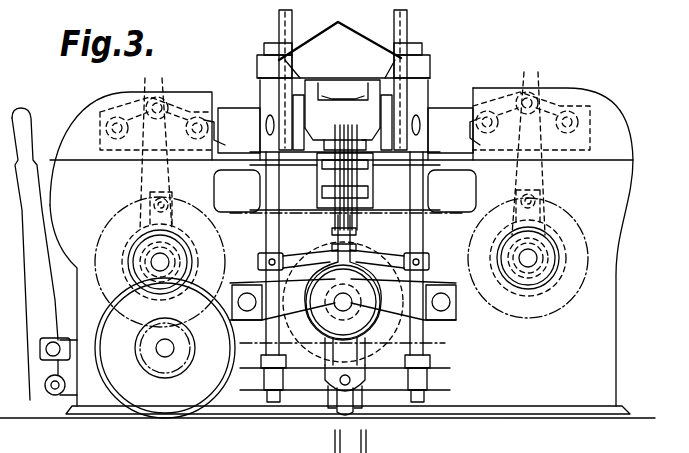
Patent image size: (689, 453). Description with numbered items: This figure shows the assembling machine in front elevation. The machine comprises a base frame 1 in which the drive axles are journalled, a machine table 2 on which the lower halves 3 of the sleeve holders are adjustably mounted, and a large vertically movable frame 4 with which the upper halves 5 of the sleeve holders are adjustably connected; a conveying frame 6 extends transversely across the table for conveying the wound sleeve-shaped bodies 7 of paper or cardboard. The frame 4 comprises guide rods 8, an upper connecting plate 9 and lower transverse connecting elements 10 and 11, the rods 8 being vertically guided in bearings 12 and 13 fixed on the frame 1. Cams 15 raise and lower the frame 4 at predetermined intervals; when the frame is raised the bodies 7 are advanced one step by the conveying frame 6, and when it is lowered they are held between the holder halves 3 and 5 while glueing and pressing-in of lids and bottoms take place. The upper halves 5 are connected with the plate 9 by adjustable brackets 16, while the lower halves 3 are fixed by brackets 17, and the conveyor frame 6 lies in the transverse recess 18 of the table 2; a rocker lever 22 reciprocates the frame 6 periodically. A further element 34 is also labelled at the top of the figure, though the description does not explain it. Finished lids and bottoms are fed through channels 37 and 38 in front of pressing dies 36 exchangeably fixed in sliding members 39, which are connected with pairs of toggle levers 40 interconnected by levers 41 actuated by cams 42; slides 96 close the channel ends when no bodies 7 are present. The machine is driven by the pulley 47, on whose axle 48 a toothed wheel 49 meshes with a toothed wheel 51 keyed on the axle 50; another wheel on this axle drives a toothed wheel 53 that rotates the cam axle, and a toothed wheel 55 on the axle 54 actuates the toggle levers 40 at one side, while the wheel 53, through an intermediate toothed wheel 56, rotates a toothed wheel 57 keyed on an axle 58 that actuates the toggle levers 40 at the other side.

The base frame 1 is at (616, 355).
The machine table 2 is at (508, 441).
The lower halves of the sleeve holders 3 is at (300, 166).
The vertically movable frame 4 is at (380, 52).
The upper halves of the sleeve holders 5 is at (343, 92).
The conveying frame 6 is at (333, 172).
The sleeve-shaped bodies 7 is at (346, 168).
The guide rods 8 is at (293, 102).
The upper connecting plate 9 is at (305, 60).
The lower transverse connecting element 10 is at (424, 256).
The lower transverse connecting element 11 is at (432, 376).
The bearing 12 is at (458, 162).
The bearing 13 is at (458, 322).
The cam 15 is at (378, 338).
The bracket 16 is at (360, 82).
The bracket 17 is at (316, 138).
The transverse recess 18 is at (375, 198).
The rocker lever 22 is at (338, 222).
The toggle linkage 34 is at (382, 34).
The pressing die 36 is at (445, 127).
The channel 37 is at (279, 46).
The channel 38 is at (407, 18).
The sliding member 39 is at (235, 90).
The toggle levers 40 is at (342, 145).
The lever 41 is at (146, 176).
The cam 42 is at (120, 228).
The pulley 47 is at (127, 402).
The axle 48 is at (158, 348).
The toothed wheel 49 is at (165, 370).
The axle 50 is at (246, 285).
The toothed wheel 51 is at (258, 376).
The toothed wheel 53 is at (382, 250).
The axle 54 is at (165, 260).
The toothed wheel 55 is at (112, 292).
The intermediate toothed wheel 56 is at (446, 285).
The toothed wheel 57 is at (570, 312).
The axle 58 is at (532, 257).
The slides 96 is at (257, 68).